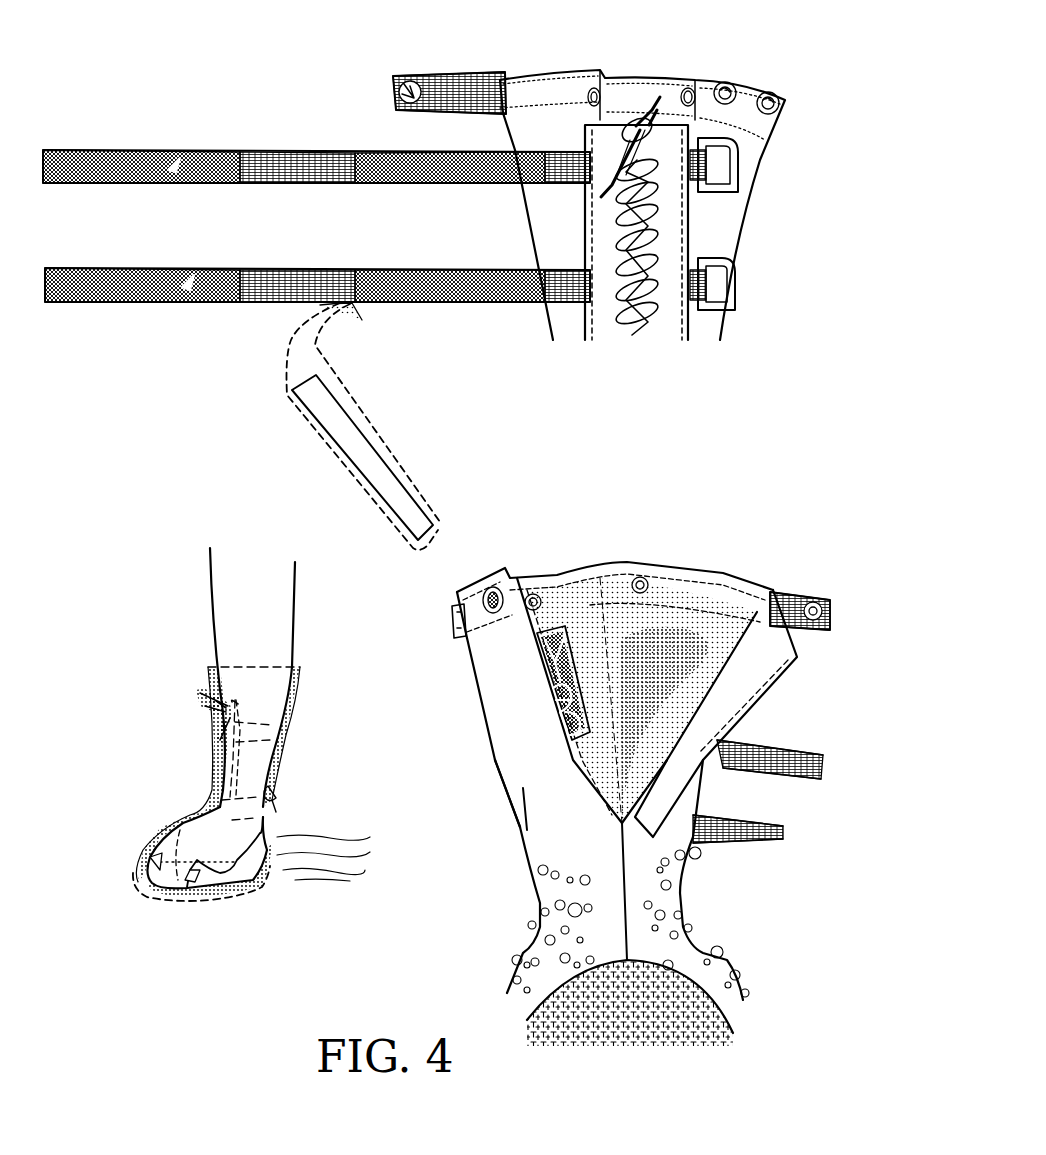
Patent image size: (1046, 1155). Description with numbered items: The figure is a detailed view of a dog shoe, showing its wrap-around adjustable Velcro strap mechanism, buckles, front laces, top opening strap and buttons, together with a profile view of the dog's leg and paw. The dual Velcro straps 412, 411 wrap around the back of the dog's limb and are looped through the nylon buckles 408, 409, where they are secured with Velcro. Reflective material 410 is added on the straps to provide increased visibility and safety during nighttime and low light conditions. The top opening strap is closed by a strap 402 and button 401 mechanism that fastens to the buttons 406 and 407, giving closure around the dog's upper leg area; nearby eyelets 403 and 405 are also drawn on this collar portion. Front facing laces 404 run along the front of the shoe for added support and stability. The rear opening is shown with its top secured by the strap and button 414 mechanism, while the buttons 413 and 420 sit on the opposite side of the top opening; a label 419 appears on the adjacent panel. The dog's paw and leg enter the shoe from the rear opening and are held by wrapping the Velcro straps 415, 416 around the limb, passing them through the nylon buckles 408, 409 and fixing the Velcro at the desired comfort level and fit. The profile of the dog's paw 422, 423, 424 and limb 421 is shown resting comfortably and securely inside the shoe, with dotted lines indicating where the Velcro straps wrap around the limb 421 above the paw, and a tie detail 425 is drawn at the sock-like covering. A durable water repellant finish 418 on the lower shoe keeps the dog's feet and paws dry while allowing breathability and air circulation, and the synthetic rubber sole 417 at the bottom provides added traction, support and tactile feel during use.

The button 401 is at (410, 90).
The strap 402 is at (461, 84).
The eyelet 403 is at (590, 94).
The front facing laces 404 is at (637, 120).
The eyelet 405 is at (699, 84).
The button 406 is at (731, 88).
The button 407 is at (781, 101).
The nylon buckle 408 is at (738, 147).
The nylon buckle 409 is at (735, 265).
The reflective material 410 is at (372, 469).
The Velcro strap 411 is at (185, 280).
The Velcro strap 412 is at (170, 162).
The button 413 is at (495, 592).
The strap and button mechanism 414 is at (813, 605).
The Velcro strap 415 is at (788, 758).
The Velcro strap 416 is at (752, 836).
The synthetic rubber sole 417 is at (660, 1003).
The durable water repellant finish 418 is at (573, 923).
The label 419 is at (550, 693).
The button 420 is at (451, 622).
The limb 421 is at (273, 598).
The paw 422 is at (273, 793).
The paw 423 is at (187, 888).
The paw 424 is at (149, 893).
The tie 425 is at (230, 710).